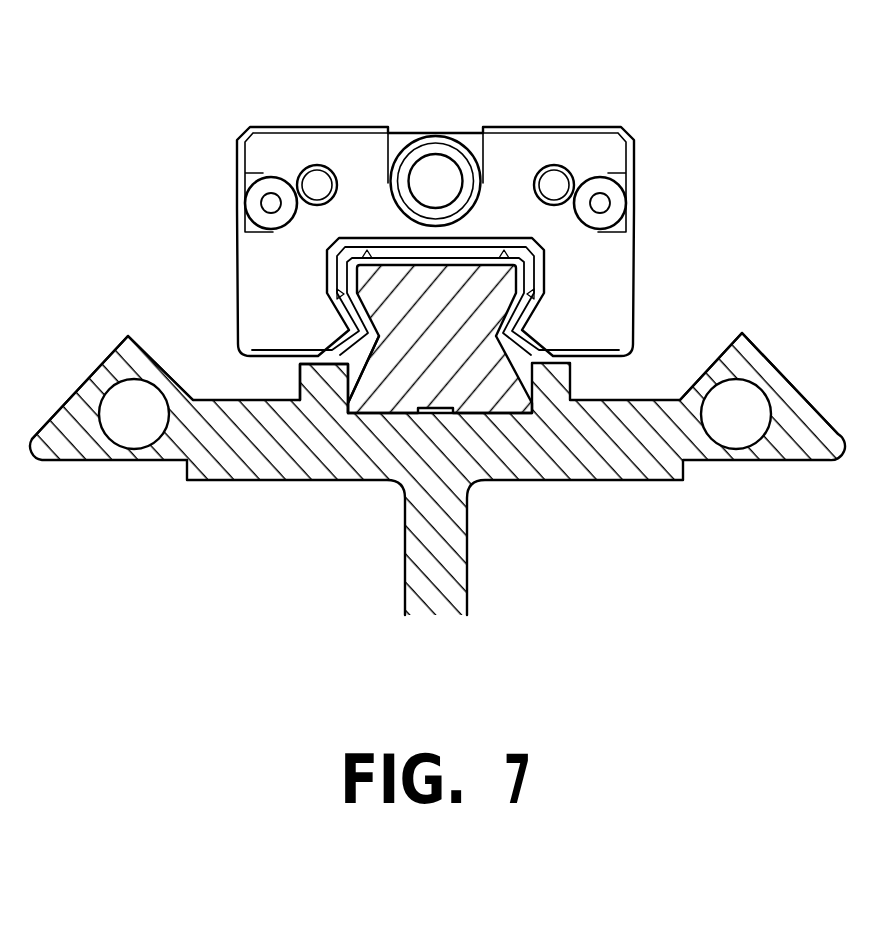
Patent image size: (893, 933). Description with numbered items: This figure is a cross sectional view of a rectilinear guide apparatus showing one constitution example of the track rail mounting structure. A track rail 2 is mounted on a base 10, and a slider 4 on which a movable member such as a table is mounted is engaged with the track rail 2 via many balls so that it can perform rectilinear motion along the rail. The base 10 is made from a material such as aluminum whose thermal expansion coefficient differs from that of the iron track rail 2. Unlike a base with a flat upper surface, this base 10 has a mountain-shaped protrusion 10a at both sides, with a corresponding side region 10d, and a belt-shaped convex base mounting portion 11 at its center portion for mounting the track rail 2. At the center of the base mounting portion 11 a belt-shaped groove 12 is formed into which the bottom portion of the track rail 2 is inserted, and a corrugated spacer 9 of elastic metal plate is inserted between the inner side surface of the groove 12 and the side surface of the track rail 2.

The track rail 2 is at (483, 398).
The slider 4 is at (526, 126).
The corrugated spacer 9 is at (523, 380).
The base 10 is at (653, 481).
The mountain-shaped protrusion 10a is at (742, 333).
The left flange of base 10d is at (128, 334).
The base mounting portion 11 is at (298, 380).
The groove 12 is at (374, 380).